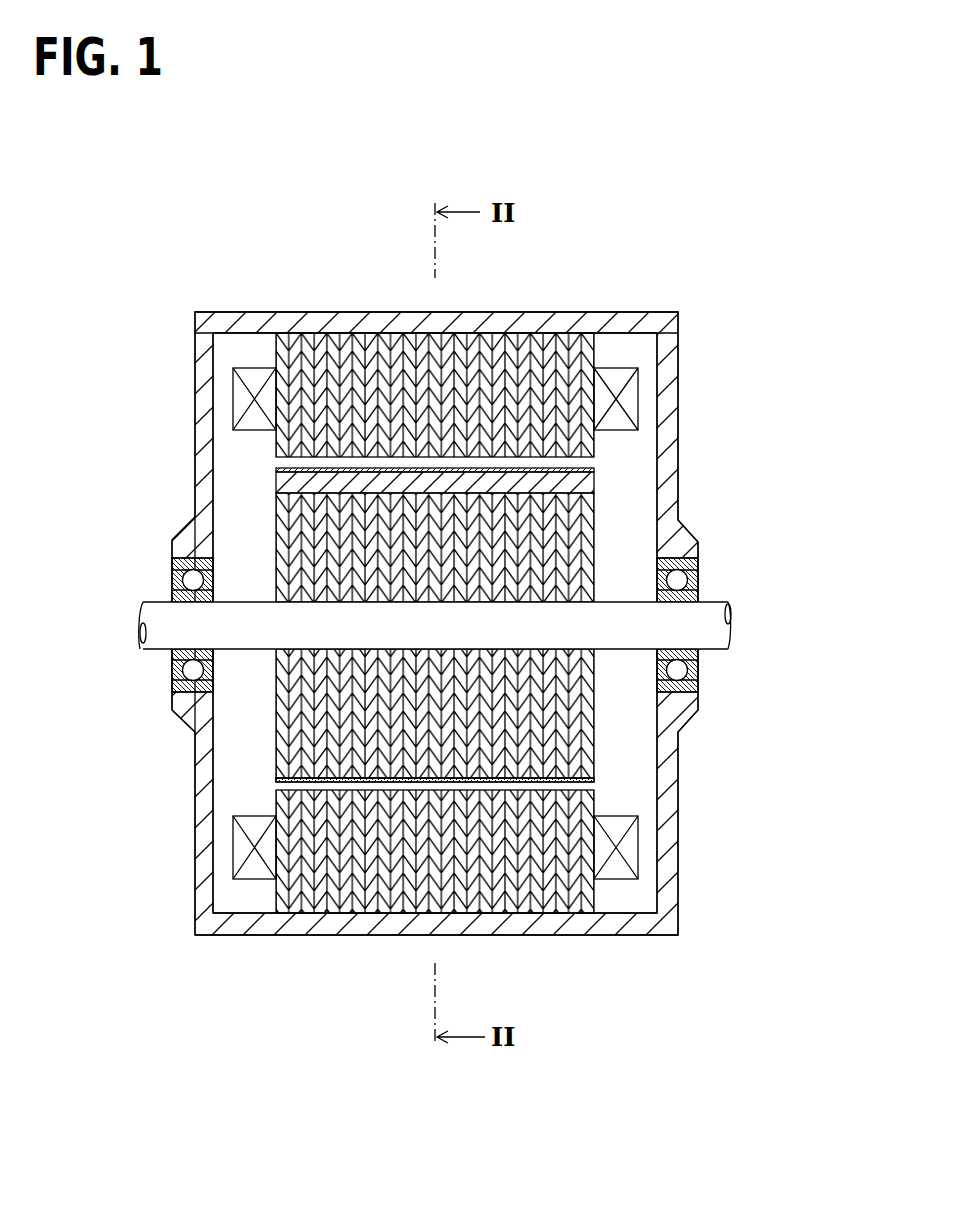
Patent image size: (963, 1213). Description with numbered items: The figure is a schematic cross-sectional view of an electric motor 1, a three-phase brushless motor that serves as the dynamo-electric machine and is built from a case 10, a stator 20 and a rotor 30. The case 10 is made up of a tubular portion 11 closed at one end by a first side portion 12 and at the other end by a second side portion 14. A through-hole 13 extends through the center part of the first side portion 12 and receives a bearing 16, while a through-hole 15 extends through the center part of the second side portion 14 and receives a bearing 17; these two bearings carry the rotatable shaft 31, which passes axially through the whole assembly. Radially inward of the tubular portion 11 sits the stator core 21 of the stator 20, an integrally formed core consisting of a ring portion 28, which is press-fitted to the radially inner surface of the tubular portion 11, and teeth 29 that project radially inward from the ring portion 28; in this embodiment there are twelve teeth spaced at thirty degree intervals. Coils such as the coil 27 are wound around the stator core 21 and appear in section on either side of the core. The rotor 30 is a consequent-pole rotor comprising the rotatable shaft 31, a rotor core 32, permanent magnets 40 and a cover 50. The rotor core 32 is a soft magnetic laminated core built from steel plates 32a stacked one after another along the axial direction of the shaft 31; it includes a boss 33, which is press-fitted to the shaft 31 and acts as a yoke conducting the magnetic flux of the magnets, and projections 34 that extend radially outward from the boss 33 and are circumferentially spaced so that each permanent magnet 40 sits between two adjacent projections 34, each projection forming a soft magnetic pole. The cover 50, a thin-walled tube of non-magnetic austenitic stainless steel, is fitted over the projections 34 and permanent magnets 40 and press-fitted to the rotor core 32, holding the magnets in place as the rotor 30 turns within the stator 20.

The electric motor 1 is at (349, 237).
The case 10 is at (267, 300).
The tubular portion 11 is at (623, 322).
The first side portion 12 is at (205, 846).
The through-hole 13 is at (173, 575).
The second side portion 14 is at (667, 793).
The through-hole 15 is at (700, 580).
The bearing 16 is at (185, 672).
The bearing 17 is at (688, 670).
The stator 20 is at (655, 388).
The stator core 21 is at (123, 353).
The coil 27 is at (632, 405).
The ring portion 28 is at (282, 352).
The teeth 29 is at (282, 446).
The rotor 30 is at (613, 529).
The rotatable shaft 31 is at (713, 632).
The rotor core 32 is at (112, 728).
The steel plates 32a is at (280, 523).
The boss 33 is at (277, 660).
The projections 34 is at (278, 767).
The permanent magnets 40 is at (292, 483).
The cover 50 is at (596, 780).